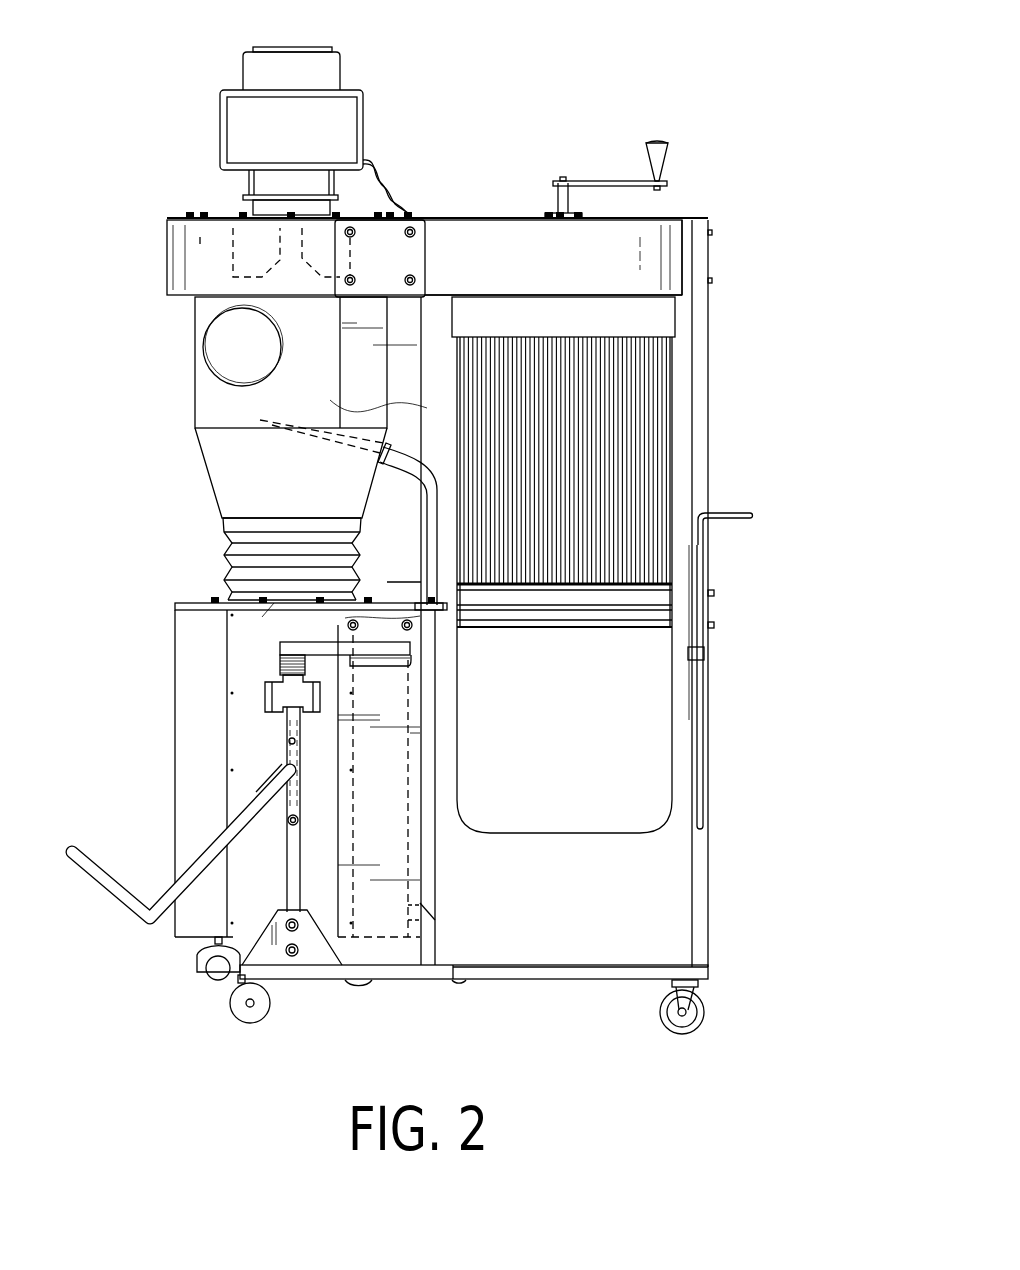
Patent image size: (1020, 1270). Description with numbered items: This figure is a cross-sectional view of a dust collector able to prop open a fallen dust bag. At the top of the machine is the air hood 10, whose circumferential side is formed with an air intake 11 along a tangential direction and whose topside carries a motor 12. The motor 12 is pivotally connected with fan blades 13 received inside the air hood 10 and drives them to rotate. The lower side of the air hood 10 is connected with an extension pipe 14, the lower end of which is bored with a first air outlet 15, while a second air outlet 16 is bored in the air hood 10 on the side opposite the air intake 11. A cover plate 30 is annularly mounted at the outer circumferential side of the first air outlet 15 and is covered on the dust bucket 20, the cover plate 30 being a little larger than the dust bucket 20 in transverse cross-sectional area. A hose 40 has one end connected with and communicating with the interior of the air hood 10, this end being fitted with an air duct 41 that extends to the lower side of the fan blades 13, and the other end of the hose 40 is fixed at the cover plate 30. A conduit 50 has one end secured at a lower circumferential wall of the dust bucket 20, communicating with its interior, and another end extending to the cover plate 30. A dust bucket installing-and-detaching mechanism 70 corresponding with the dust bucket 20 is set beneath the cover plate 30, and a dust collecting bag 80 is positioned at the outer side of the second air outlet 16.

The air hood 10 is at (192, 370).
The air intake 11 is at (218, 338).
The motor 12 is at (333, 72).
The fan blades 13 is at (233, 243).
The extension pipe 14 is at (235, 540).
The first air outlet 15 is at (280, 605).
The second air outlet 16 is at (428, 252).
The dust bucket 20 is at (170, 762).
The cover plate 30 is at (180, 592).
The hose 40 is at (440, 507).
The air duct 41 is at (320, 430).
The conduit 50 is at (440, 878).
The dust bucket installing-and-detaching mechanism 70 is at (276, 845).
The dust collecting bag 80 is at (660, 723).